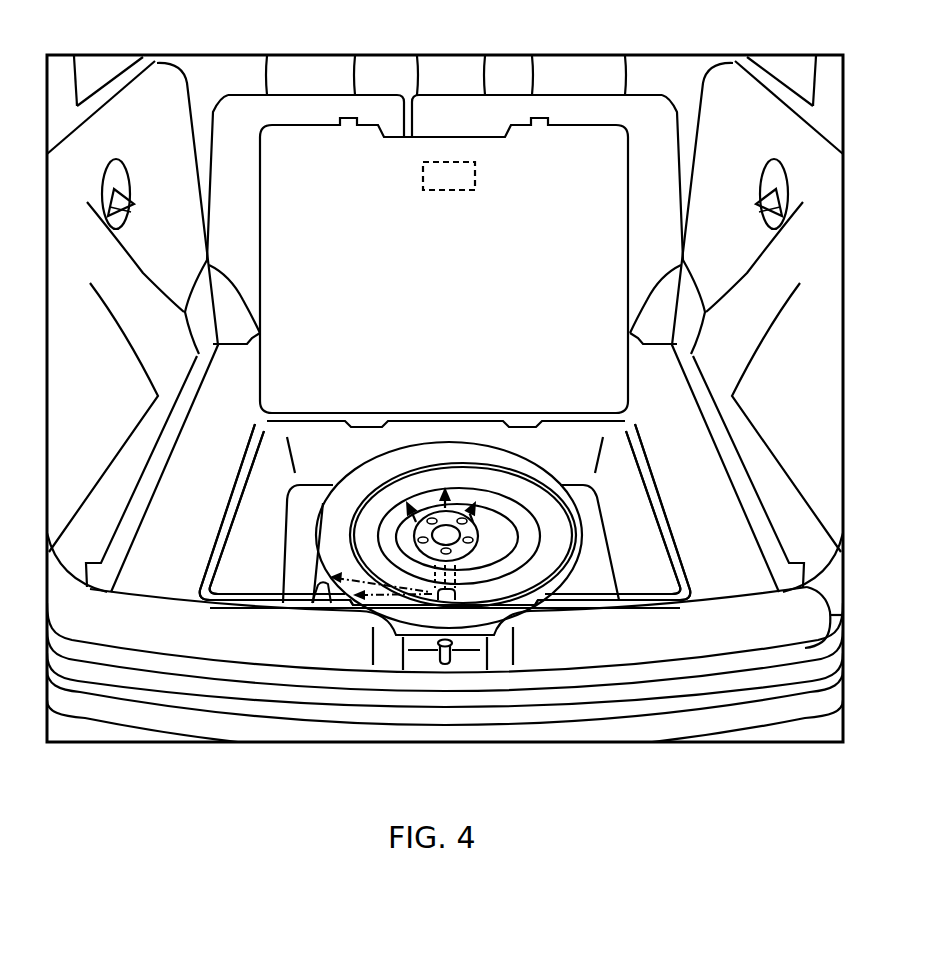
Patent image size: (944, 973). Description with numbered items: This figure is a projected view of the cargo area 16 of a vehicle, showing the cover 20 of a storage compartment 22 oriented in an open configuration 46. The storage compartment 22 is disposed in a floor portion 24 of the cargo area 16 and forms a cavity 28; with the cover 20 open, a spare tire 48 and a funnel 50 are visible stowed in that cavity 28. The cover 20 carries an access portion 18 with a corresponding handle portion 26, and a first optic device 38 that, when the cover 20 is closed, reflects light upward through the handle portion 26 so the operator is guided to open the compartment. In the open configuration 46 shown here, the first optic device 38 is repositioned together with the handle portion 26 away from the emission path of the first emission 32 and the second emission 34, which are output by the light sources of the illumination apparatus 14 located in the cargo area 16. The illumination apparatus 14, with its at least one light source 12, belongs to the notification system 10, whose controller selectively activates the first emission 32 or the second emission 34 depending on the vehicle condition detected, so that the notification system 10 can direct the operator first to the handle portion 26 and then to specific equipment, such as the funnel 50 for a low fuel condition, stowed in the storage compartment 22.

The notification system 10 is at (621, 494).
The light source 12 is at (434, 606).
The illumination apparatus 14 is at (445, 582).
The cargo area 16 is at (590, 108).
The access portion 18 is at (416, 189).
The cover 20 is at (598, 209).
The storage compartment 22 is at (268, 479).
The floor portion 24 is at (182, 493).
The handle portion 26 is at (449, 176).
The cavity 28 is at (445, 526).
The first emission 32 is at (372, 566).
The second emission 34 is at (490, 520).
The first optic device 38 is at (449, 176).
The open configuration 46 is at (286, 160).
The spare tire 48 is at (372, 472).
The funnel 50 is at (318, 583).